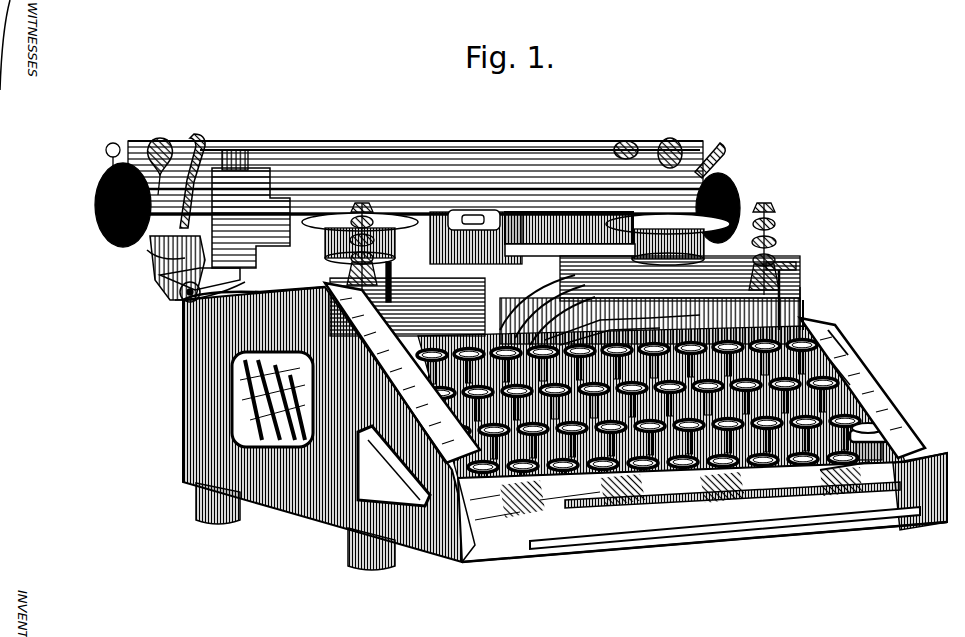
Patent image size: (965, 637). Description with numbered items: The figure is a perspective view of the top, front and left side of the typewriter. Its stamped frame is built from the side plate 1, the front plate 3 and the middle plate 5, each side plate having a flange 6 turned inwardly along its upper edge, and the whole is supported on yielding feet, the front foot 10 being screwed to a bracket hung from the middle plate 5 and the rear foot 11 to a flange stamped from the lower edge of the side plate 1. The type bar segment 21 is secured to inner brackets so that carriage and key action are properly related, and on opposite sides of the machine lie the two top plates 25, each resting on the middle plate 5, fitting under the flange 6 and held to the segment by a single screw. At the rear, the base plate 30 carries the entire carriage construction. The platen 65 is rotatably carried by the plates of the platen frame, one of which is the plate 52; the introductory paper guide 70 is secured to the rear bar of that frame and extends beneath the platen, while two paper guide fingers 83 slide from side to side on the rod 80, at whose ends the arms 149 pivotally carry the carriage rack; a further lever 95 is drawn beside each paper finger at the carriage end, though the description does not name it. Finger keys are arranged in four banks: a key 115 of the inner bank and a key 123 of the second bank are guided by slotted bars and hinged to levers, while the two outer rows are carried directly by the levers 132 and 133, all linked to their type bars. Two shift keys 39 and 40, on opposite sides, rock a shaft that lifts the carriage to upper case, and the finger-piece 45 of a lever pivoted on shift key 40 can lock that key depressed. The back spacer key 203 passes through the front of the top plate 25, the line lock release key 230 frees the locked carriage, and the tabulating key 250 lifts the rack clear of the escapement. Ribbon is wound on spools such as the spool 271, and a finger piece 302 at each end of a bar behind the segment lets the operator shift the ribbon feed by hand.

The side plate 1 is at (303, 497).
The front plate 3 is at (725, 518).
The middle plate 5 is at (810, 335).
The flange 6 is at (160, 275).
The front foot 10 is at (378, 566).
The rear foot 11 is at (203, 520).
The type bar segment 21 is at (484, 250).
The top plate 25 is at (800, 296).
The base plate 30 is at (176, 298).
The shift key 39 is at (487, 470).
The shift key 40 is at (895, 436).
The finger-piece 45 is at (885, 425).
The platen frame plate 52 is at (147, 250).
The platen 65 is at (437, 187).
The introductory paper guide 70 is at (463, 157).
The rod 80 is at (163, 283).
The paper guide finger 83 is at (244, 200).
The paper release lever 95 is at (197, 138).
The key 115 is at (812, 320).
The key 123 is at (843, 372).
The lever 132 is at (881, 410).
The lever 133 is at (838, 462).
The arm 149 is at (157, 141).
The back spacer key 203 is at (788, 264).
The line lock release key 230 is at (387, 276).
The tabulating key 250 is at (840, 350).
The ribbon spool 271 is at (334, 214).
The finger piece 302 is at (247, 281).